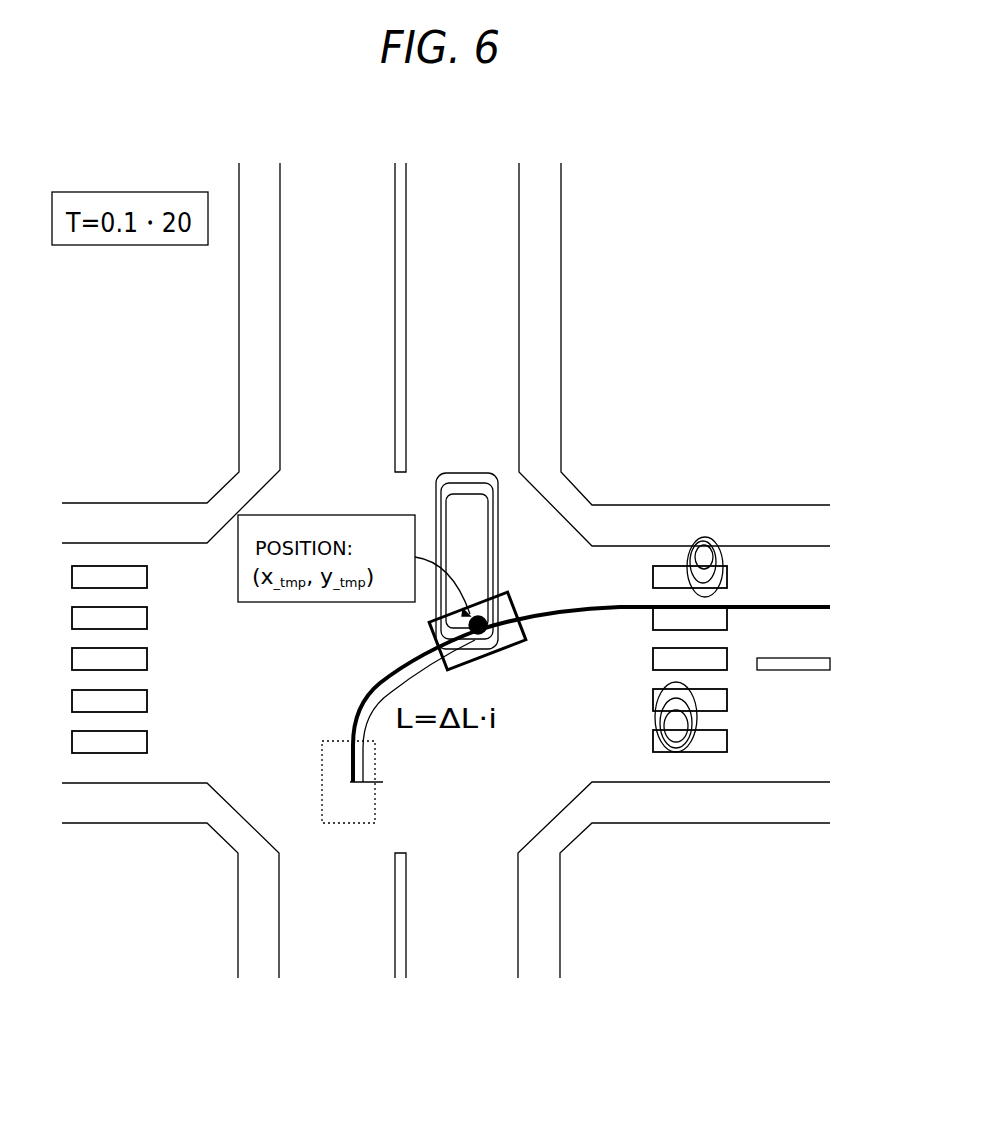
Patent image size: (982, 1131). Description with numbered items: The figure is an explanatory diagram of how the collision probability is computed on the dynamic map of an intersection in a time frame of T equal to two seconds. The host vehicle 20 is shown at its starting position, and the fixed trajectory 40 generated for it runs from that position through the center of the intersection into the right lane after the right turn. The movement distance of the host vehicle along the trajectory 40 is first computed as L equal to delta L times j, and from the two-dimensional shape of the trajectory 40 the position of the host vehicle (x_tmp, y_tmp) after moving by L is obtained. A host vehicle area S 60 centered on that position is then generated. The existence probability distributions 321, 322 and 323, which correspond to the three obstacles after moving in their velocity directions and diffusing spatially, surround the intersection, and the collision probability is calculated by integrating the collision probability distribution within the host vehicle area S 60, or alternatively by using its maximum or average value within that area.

The host vehicle 20 is at (321, 757).
The trajectory 40 is at (373, 684).
The host vehicle area S 60 is at (518, 651).
The existence probability distribution 321 is at (467, 477).
The existence probability distribution 322 is at (704, 537).
The existence probability distribution 323 is at (673, 753).